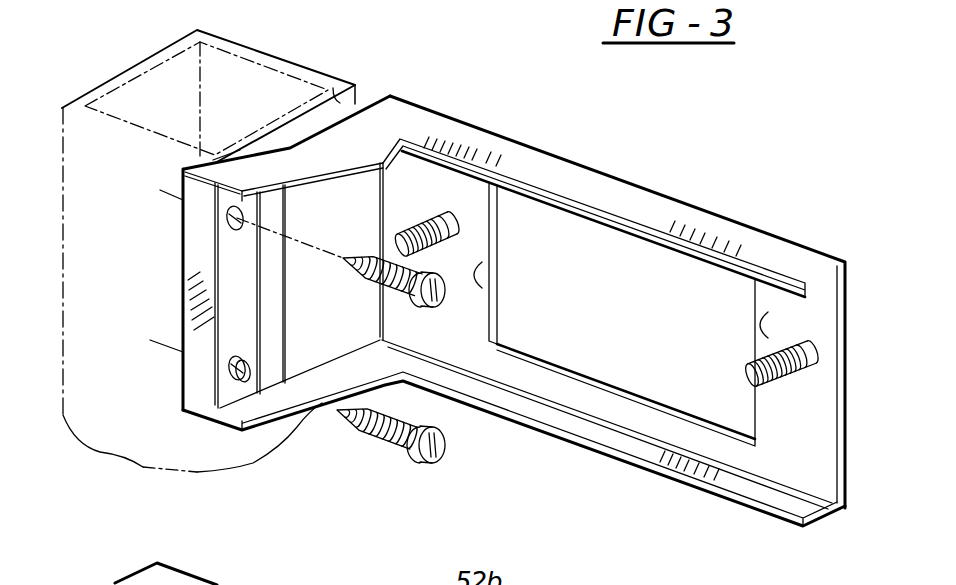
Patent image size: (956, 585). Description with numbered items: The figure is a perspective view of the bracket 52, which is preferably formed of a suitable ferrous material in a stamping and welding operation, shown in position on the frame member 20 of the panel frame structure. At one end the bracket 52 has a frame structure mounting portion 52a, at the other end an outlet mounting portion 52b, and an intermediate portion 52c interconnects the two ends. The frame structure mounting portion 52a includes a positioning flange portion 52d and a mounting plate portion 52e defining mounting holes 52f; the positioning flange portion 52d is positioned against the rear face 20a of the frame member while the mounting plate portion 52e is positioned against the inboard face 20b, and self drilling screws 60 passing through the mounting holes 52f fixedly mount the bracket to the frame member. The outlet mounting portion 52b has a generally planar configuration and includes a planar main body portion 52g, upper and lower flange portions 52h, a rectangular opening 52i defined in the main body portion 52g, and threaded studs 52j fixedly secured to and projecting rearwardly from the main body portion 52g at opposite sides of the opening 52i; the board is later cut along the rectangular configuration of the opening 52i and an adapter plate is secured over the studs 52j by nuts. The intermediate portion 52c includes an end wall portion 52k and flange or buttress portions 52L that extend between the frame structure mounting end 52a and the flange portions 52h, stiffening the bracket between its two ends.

The frame member 20 is at (112, 80).
The rear face of the frame member 20a is at (147, 238).
The inboard face of the frame member 20b is at (343, 82).
The bracket 52 is at (469, 314).
The frame structure mounting portion 52a is at (166, 321).
The outlet mounting portion 52b is at (790, 205).
The intermediate portion 52c is at (390, 112).
The positioning flange portion 52d is at (182, 412).
The mounting plate portion 52e is at (228, 160).
The mounting holes 52f is at (243, 370).
The planar main body portion 52g is at (483, 287).
The upper and lower flange portions 52h is at (679, 213).
The rectangular aperture or opening 52i is at (568, 368).
The threaded studs 52j is at (449, 246).
The end wall portion 52k is at (342, 307).
The flange or buttress portions 52L is at (320, 173).
The self drilling screws 60 is at (419, 297).